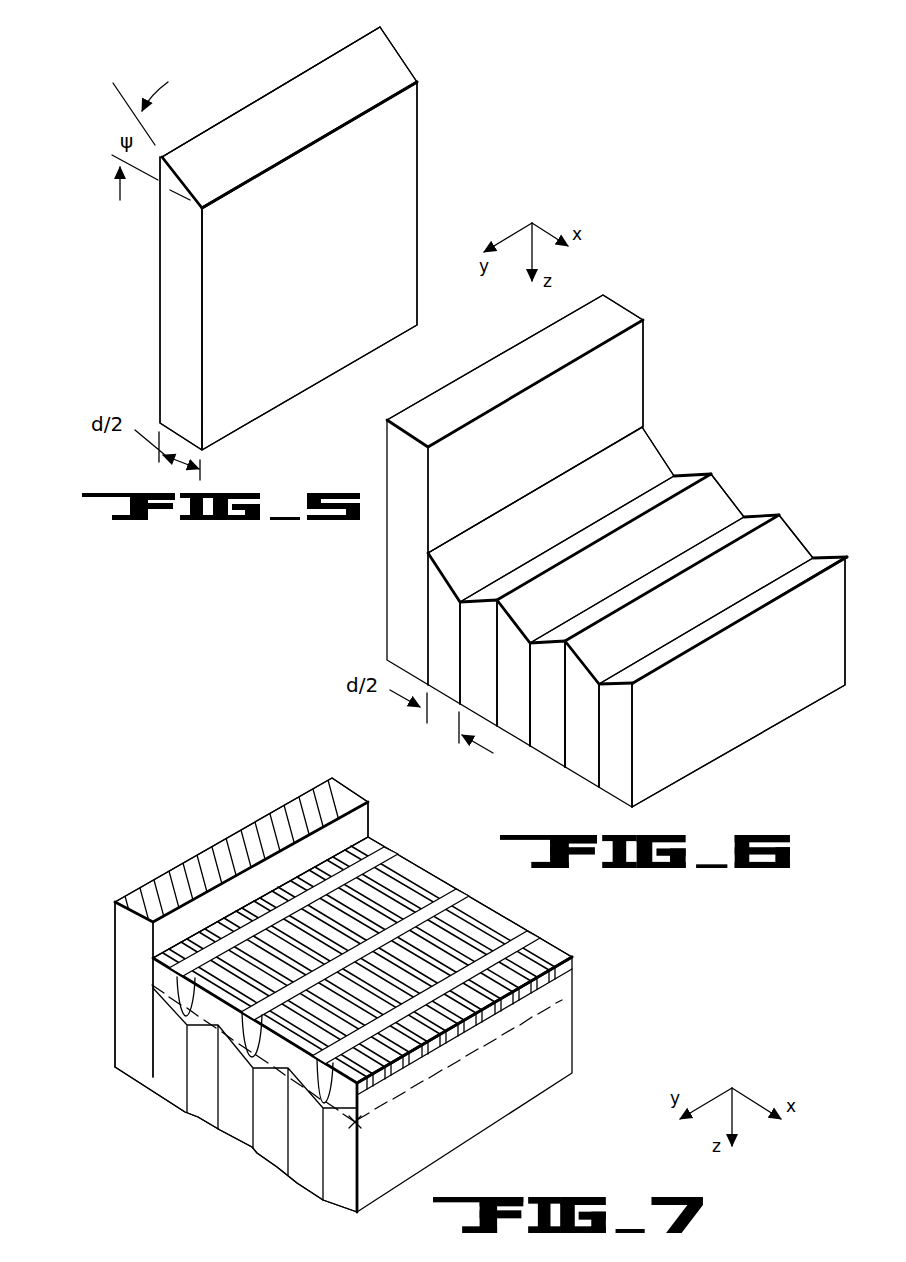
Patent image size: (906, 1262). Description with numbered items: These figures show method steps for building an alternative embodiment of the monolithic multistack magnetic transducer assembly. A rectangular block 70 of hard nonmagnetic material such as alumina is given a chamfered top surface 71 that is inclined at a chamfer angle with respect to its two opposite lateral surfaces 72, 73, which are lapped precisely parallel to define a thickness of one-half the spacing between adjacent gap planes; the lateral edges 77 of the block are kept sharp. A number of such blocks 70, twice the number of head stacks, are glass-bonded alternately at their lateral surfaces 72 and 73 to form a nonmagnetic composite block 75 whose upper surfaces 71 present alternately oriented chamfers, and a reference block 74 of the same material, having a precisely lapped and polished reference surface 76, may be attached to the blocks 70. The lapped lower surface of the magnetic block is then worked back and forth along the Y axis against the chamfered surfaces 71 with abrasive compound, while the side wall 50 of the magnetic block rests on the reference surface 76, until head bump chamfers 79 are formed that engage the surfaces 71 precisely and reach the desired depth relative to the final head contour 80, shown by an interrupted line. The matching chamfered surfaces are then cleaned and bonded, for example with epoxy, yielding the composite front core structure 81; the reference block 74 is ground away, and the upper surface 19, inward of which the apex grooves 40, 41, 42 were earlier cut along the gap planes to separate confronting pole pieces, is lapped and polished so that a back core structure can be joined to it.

In FIG. 5, the rectangular block of nonmagnetic material 70 is at (246, 73).
In FIG. 6, the rectangular block of nonmagnetic material 70 is at (578, 763).
In FIG. 5, the chamfered top surface 71 is at (388, 60).
In FIG. 6, the chamfered top surface 71 is at (687, 475).
In FIG. 5, the lateral surface 72 is at (158, 300).
In FIG. 6, the lateral surface 72 is at (770, 677).
In FIG. 5, the lateral surface 73 is at (203, 307).
In FIG. 6, the lateral surface 73 is at (612, 732).
In FIG. 6, the reference block 74 is at (618, 312).
In FIG. 7, the reference block 74 is at (335, 795).
In FIG. 6, the nonmagnetic composite block 75 is at (762, 383).
In FIG. 6, the reference surface 76 is at (640, 373).
In FIG. 7, the reference surface 76 is at (362, 823).
In FIG. 5, the lateral edge 77 is at (310, 62).
In FIG. 7, the lateral edge 77 is at (568, 984).
In FIG. 7, the upper surface 19 is at (503, 923).
In FIG. 7, the apex groove 40 is at (393, 858).
In FIG. 7, the apex groove 41 is at (462, 900).
In FIG. 7, the apex groove 42 is at (533, 942).
In FIG. 7, the side wall 50 is at (152, 1068).
In FIG. 7, the head bump chamfer 79 is at (221, 1006).
In FIG. 7, the final head contour 80 is at (586, 997).
In FIG. 7, the composite front core structure 81 is at (235, 791).